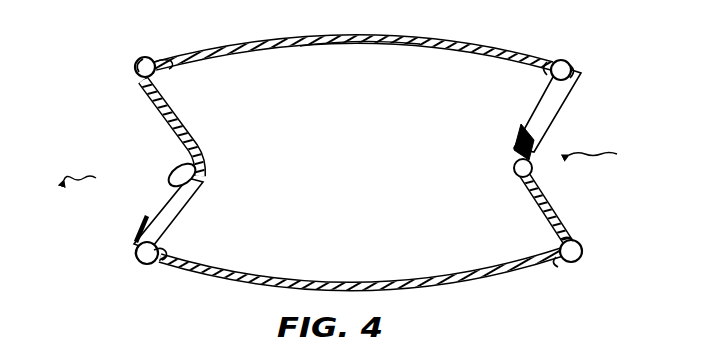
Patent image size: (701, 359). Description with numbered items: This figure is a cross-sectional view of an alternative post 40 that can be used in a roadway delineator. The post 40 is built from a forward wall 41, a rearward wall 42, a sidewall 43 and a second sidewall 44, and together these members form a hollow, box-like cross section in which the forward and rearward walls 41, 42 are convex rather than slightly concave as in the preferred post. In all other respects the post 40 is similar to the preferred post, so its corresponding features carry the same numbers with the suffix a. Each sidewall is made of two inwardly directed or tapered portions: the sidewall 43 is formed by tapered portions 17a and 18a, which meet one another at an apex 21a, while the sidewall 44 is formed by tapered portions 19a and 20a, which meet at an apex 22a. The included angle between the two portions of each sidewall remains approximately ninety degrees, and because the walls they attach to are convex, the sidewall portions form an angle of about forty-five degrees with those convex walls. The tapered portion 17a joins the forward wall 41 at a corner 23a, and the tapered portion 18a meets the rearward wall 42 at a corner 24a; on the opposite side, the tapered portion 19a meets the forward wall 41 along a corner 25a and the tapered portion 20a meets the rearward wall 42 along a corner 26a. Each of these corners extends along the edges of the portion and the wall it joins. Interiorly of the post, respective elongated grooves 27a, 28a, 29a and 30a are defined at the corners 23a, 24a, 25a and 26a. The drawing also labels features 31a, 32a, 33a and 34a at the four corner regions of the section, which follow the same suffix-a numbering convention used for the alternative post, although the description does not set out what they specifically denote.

The alternative post 40 is at (380, 37).
The forward wall 41 is at (332, 50).
The rearward wall 42 is at (402, 280).
The tapered side portion 17a is at (167, 117).
The tapered side portion 18a is at (161, 212).
The tapered side portion 19a is at (558, 112).
The tapered side portion 20a is at (548, 207).
The apex 21a is at (197, 185).
The apex 22a is at (521, 171).
The corner 23a is at (135, 70).
The corner 24a is at (133, 248).
The corner 25a is at (580, 79).
The corner 26a is at (547, 260).
The elongated groove 27a is at (172, 60).
The elongated groove 28a is at (160, 259).
The elongated groove 29a is at (550, 62).
The elongated groove 30a is at (567, 232).
The upper left corner loop 31a is at (138, 61).
The lower left corner loop 32a is at (137, 265).
The upper right corner loop 33a is at (573, 63).
The lower right corner loop 34a is at (573, 257).
The sidewall 43 is at (63, 182).
The sidewall 44 is at (613, 154).